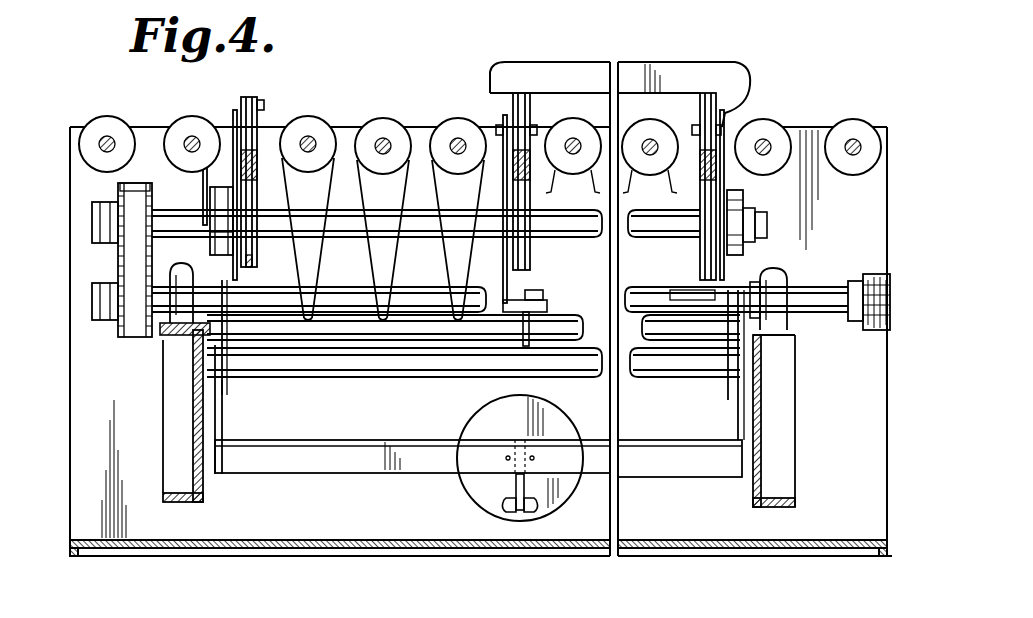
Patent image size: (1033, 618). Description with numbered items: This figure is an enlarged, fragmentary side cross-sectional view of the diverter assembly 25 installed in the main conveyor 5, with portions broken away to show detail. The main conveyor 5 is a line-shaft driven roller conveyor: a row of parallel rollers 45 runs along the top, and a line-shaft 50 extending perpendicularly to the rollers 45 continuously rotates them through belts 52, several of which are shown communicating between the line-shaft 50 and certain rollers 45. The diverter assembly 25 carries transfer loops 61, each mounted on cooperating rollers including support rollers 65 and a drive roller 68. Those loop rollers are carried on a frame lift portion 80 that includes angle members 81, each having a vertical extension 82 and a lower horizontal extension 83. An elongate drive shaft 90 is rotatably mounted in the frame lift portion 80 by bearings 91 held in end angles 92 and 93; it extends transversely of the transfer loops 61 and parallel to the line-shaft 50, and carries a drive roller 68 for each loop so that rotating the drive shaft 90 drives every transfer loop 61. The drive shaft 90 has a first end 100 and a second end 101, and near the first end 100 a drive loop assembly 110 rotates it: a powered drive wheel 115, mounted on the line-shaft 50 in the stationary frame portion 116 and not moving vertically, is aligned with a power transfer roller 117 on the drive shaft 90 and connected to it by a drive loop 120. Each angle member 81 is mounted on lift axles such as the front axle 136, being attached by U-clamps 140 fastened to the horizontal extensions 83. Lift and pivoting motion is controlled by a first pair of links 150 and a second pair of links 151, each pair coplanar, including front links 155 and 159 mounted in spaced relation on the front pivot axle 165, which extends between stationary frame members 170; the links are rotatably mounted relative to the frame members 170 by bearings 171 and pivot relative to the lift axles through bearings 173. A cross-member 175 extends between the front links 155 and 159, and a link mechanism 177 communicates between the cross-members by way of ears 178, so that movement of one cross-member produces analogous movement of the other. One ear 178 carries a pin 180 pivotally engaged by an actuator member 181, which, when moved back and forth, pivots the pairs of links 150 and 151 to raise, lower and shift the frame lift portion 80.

The main conveyor 5 is at (887, 130).
The diverter assembly 25 is at (160, 336).
The rollers 45 is at (118, 118).
The line-shaft 50 is at (418, 296).
The belts 52 is at (333, 200).
The transfer loops 61 is at (251, 97).
The support rollers 65 is at (263, 105).
The drive roller 68 is at (255, 184).
The frame lift portion 80 is at (102, 202).
The angle members 81 is at (234, 112).
The vertical extension 82 is at (220, 166).
The lower horizontal extension 83 is at (540, 297).
The drive shaft 90 is at (565, 238).
The bearings 91 is at (210, 248).
The end angle 92 is at (250, 268).
The end angle 93 is at (732, 172).
The first end 100 is at (92, 218).
The second end 101 is at (758, 230).
The drive loop assembly 110 is at (130, 262).
The powered drive wheel 115 is at (120, 330).
The stationary frame portion 116 is at (172, 348).
The power transfer roller 117 is at (148, 200).
The drive loop 120 is at (134, 185).
The front axle 136 is at (583, 325).
The U-clamps 140 is at (530, 346).
The first pair of links 150 is at (225, 404).
The second pair of links 151 is at (738, 400).
The front link 155 is at (225, 428).
The front link 159 is at (738, 430).
The front pivot axle 165 is at (388, 372).
The frame members 170 is at (195, 440).
The bearings 171 is at (222, 392).
The bearings 173 is at (224, 300).
The cross-member 175 is at (305, 470).
The link mechanism 177 is at (497, 509).
The ears 178 is at (515, 487).
The pin 180 is at (538, 458).
The actuator member 181 is at (475, 422).